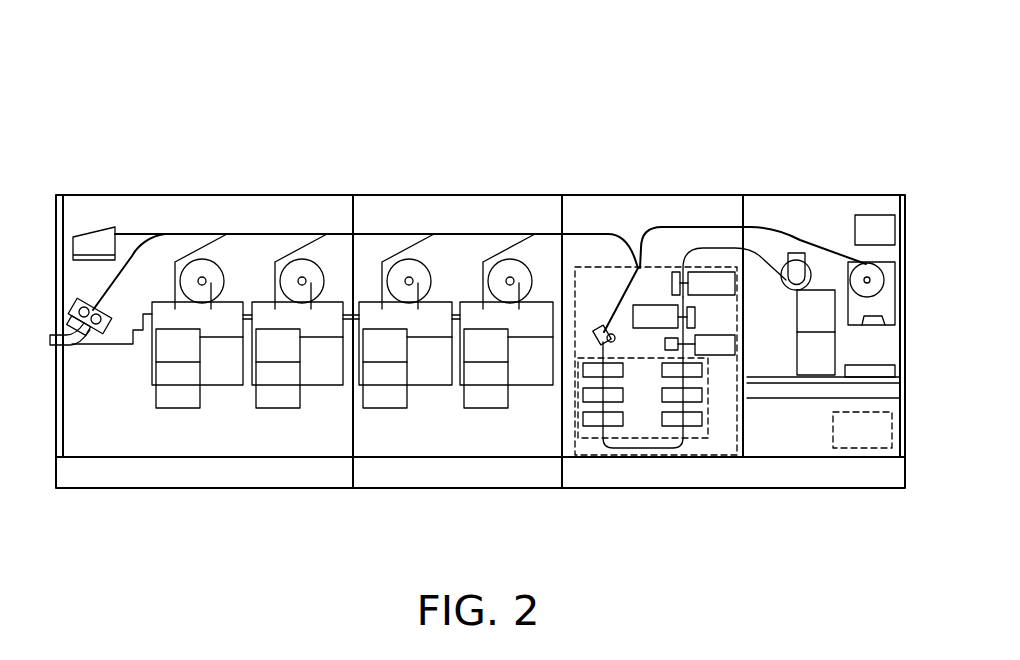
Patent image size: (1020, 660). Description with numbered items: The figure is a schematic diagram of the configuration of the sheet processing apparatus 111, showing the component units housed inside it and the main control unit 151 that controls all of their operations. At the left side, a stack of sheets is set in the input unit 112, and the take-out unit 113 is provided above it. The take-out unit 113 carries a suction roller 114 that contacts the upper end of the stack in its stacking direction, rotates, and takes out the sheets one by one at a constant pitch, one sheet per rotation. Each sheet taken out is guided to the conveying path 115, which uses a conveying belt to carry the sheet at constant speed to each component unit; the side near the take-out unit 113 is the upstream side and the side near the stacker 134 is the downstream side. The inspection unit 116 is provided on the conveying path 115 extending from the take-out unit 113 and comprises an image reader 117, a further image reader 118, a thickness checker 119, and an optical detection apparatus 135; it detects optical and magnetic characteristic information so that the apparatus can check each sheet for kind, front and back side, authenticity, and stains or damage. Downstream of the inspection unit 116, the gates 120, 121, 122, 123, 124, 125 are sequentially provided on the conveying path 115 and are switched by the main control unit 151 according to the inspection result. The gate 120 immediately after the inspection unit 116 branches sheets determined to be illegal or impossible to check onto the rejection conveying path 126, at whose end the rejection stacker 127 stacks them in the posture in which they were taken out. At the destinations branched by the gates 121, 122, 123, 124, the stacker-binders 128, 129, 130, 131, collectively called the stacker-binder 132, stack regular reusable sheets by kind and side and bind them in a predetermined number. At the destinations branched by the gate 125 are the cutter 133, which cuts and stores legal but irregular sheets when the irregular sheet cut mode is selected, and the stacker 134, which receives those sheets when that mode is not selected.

The sheet processing apparatus 111 is at (556, 124).
The input unit 112 is at (808, 363).
The take-out unit 113 is at (797, 253).
The suction roller 114 is at (781, 262).
The conveying path 115 is at (764, 273).
The inspection unit 116 is at (592, 457).
The image reader 117 is at (652, 304).
The image reader 118 is at (710, 272).
The thickness checker 119 is at (598, 326).
The gate 120 is at (636, 252).
The gate 121 is at (540, 234).
The gate 122 is at (440, 234).
The gate 123 is at (327, 234).
The gate 124 is at (228, 234).
The gate 125 is at (163, 234).
The rejection conveying path 126 is at (837, 252).
The rejection stacker 127 is at (870, 272).
The stacker-binder 128 is at (529, 381).
The stacker-binder 129 is at (428, 381).
The stacker-binder 130 is at (319, 380).
The stacker-binder 131 is at (222, 380).
The stacker-binder 132 is at (373, 243).
The cutter 133 is at (98, 330).
The stacker 134 is at (92, 230).
The optical detection apparatus 135 is at (614, 424).
The main control unit 151 is at (866, 450).